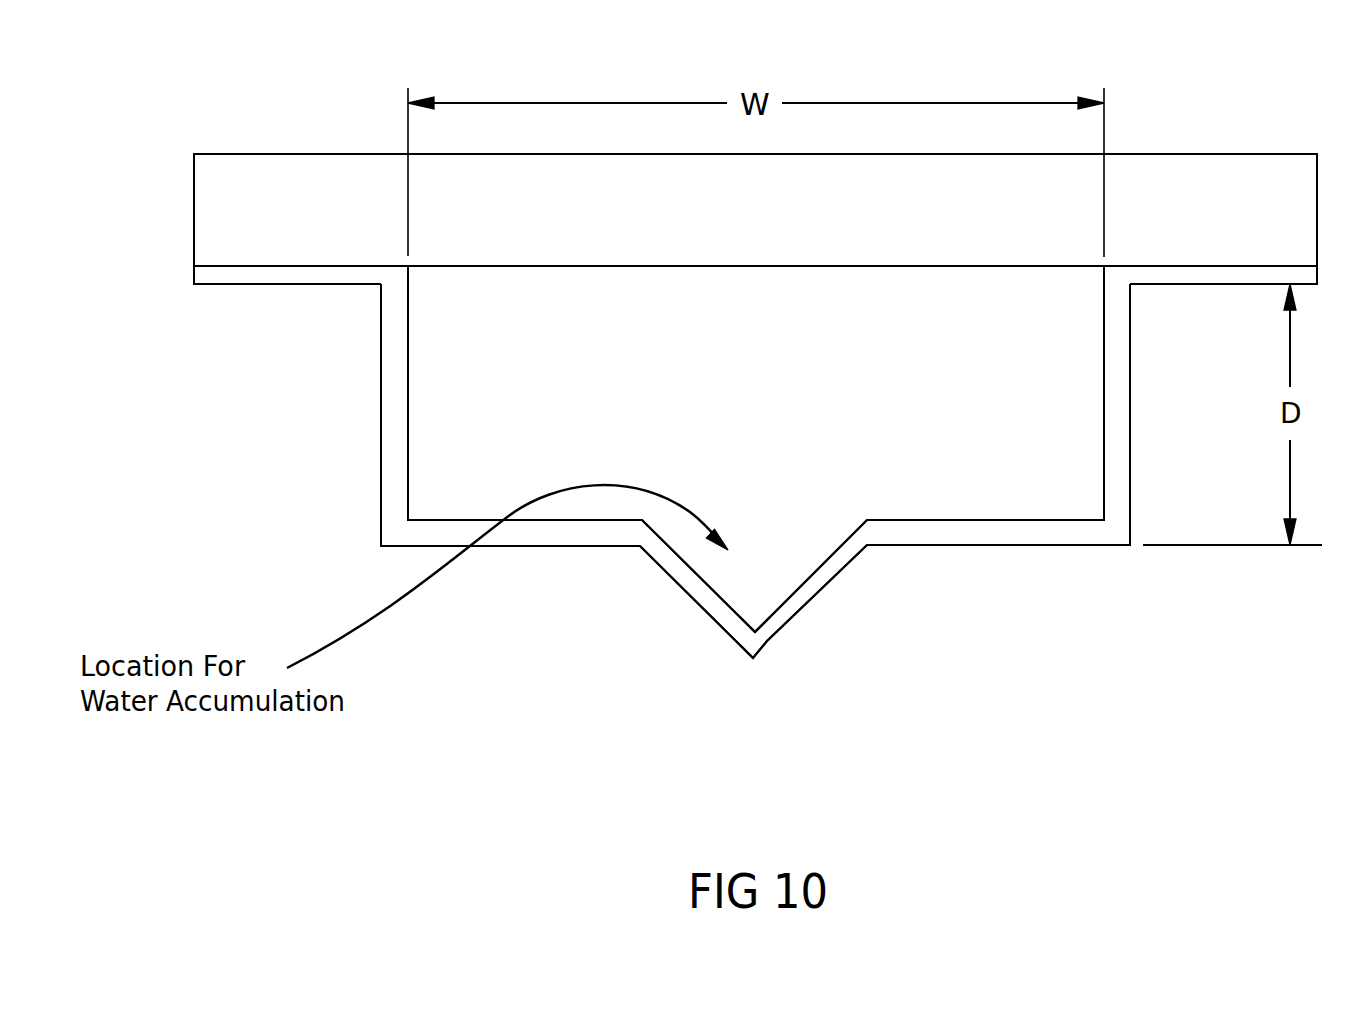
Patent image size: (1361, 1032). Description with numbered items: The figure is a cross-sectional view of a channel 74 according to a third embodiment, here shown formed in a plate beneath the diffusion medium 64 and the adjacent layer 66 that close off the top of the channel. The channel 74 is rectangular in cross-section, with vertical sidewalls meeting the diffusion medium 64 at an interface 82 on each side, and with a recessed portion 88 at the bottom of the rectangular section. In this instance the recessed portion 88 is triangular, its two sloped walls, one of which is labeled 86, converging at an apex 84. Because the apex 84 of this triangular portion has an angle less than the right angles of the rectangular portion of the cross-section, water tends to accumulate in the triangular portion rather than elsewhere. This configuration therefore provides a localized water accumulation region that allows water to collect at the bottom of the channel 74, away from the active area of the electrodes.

The diffusion medium 64 is at (755, 160).
The panel 66 is at (1180, 163).
The channel 74 is at (622, 744).
The interface 82 is at (380, 286).
The apex 84 is at (767, 568).
The sloped channel wall 86 is at (693, 587).
The recessed portion 88 is at (755, 628).